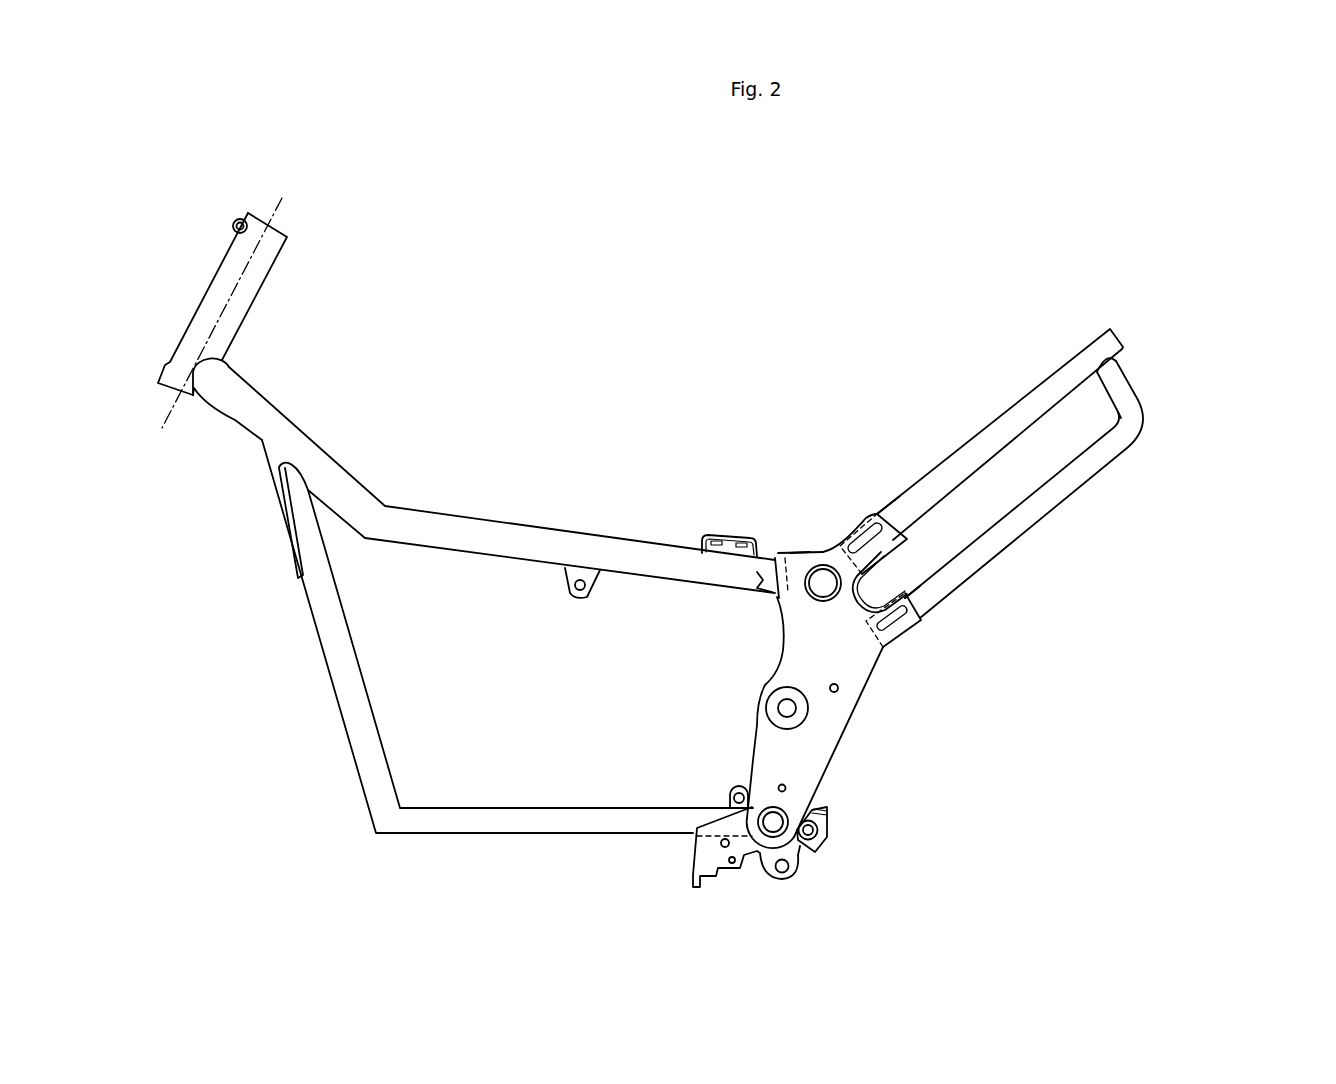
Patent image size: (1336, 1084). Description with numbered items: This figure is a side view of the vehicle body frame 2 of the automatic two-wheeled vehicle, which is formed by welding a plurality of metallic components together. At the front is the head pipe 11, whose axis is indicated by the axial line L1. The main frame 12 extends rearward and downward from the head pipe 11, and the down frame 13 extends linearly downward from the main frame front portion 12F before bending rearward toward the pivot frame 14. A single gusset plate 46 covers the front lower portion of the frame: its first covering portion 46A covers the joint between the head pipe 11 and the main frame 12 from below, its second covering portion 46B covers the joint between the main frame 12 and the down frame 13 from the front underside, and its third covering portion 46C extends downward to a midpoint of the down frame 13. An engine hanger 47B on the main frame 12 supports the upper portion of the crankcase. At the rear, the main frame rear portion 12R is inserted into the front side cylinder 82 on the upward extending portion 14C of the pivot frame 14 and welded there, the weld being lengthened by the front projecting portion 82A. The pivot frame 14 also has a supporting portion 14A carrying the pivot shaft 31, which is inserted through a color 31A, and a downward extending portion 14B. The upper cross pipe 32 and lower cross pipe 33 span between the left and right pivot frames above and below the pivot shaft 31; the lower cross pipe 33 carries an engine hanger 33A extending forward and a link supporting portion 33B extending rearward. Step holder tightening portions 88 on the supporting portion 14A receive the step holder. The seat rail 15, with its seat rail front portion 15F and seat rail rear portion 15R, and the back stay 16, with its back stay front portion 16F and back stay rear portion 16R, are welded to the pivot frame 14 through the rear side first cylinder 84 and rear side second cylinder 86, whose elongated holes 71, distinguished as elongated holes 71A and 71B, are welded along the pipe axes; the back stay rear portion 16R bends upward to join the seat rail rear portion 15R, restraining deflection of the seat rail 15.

The vehicle body frame 2 is at (707, 532).
The axial line of the head pipe L1 is at (232, 297).
The head pipe 11 is at (212, 305).
The gusset plate 46 is at (249, 433).
The first covering portion 46A is at (208, 405).
The second covering portion 46B is at (250, 452).
The third covering portion 46C is at (284, 548).
The main frame 12 is at (508, 495).
The main frame front portion 12F is at (258, 388).
The main frame rear portion 12R is at (776, 556).
The down frame 13 is at (320, 637).
The pivot frame 14 is at (846, 603).
The supporting portion 14A is at (830, 723).
The downward extending portion 14B is at (800, 798).
The upward extending portion 14C is at (815, 635).
The seat rail 15 is at (1010, 393).
The seat rail front portion 15F is at (877, 526).
The seat rail rear portion 15R is at (1104, 328).
The back stay 16 is at (1089, 526).
The back stay front portion 16F is at (907, 638).
The back stay rear portion 16R is at (1128, 448).
The pivot shaft 31 is at (788, 708).
The color 31A is at (773, 723).
The upper cross pipe 32 is at (818, 553).
The lower cross pipe 33 is at (769, 847).
The engine hanger 33A is at (730, 800).
The link supporting portion 33B is at (832, 832).
The engine hanger 47B is at (597, 582).
The elongated hole 71 is at (938, 542).
The elongated hole of the rear side first cylinder 71A is at (877, 513).
The elongated hole of the rear side second cylinder 71B is at (952, 659).
The front side cylinder 82 is at (804, 556).
The front projecting portion 82A is at (758, 548).
The rear side first cylinder 84 is at (886, 556).
The rear side second cylinder 86 is at (921, 622).
The step holder tightening portion 88 is at (839, 689).